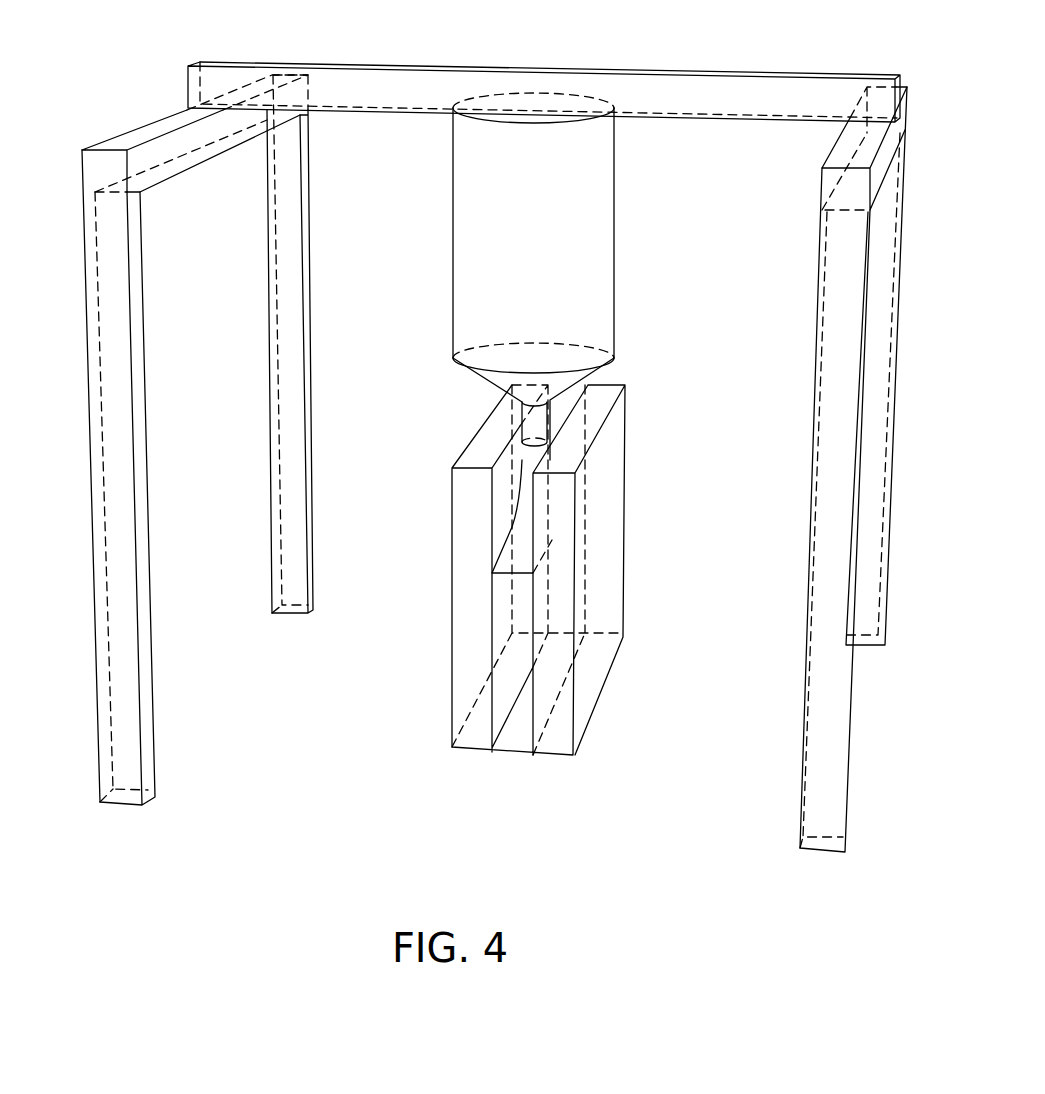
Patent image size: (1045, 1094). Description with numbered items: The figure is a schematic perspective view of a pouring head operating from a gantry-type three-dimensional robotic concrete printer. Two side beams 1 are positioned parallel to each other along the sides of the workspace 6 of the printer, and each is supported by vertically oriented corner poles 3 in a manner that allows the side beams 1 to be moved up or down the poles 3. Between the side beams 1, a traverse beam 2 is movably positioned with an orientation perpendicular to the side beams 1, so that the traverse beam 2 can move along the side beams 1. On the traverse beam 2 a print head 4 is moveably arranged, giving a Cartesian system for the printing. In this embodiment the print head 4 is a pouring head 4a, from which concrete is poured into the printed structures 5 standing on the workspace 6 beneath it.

The side beam 1 is at (145, 132).
The traverse beam 2 is at (375, 82).
The corner pole 3 is at (122, 468).
The print head 4 is at (598, 240).
The pouring head 4a is at (522, 408).
The printed structure 5 is at (595, 665).
The workspace 6 is at (428, 777).